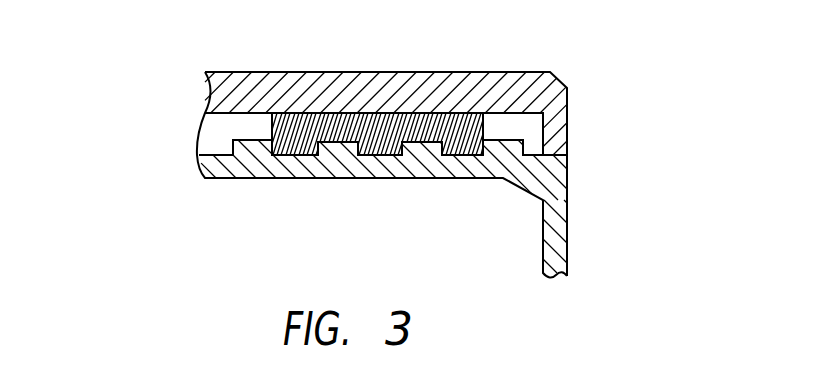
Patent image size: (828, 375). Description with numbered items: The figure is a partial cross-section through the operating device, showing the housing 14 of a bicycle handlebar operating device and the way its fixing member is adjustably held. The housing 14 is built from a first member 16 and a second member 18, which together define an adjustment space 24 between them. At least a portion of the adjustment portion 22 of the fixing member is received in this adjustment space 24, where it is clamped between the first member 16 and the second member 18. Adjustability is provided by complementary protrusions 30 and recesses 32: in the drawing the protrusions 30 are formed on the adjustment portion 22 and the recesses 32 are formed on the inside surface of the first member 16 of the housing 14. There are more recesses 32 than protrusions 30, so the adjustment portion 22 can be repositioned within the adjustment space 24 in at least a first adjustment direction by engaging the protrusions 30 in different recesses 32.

The housing 14 is at (183, 122).
The first member 16 is at (493, 170).
The second member 18 is at (488, 80).
The adjustment portion 22 is at (388, 118).
The adjustment space 24 is at (242, 122).
The protrusions 30 is at (302, 153).
The recesses 32 is at (218, 152).